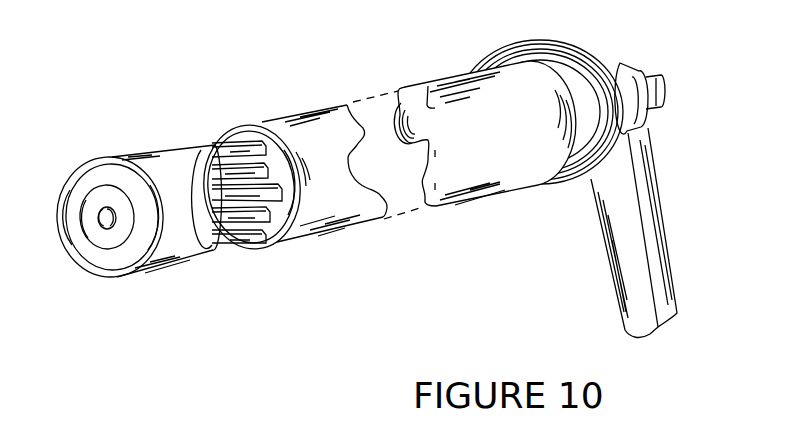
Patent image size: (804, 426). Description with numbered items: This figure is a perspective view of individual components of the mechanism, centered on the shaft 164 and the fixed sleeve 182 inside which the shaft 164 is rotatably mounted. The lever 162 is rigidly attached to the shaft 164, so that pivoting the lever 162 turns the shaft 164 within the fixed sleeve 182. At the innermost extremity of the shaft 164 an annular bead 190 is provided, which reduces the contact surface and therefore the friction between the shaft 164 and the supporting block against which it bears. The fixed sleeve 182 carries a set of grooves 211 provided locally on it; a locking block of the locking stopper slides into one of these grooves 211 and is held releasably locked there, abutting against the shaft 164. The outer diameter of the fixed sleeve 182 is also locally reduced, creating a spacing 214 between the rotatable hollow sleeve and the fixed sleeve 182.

The shaft 164 is at (104, 238).
The set of grooves 211 is at (215, 245).
The spacing 214 is at (241, 130).
The fixed sleeve 182 is at (430, 90).
The annular bead 190 is at (662, 79).
The lever 162 is at (677, 306).